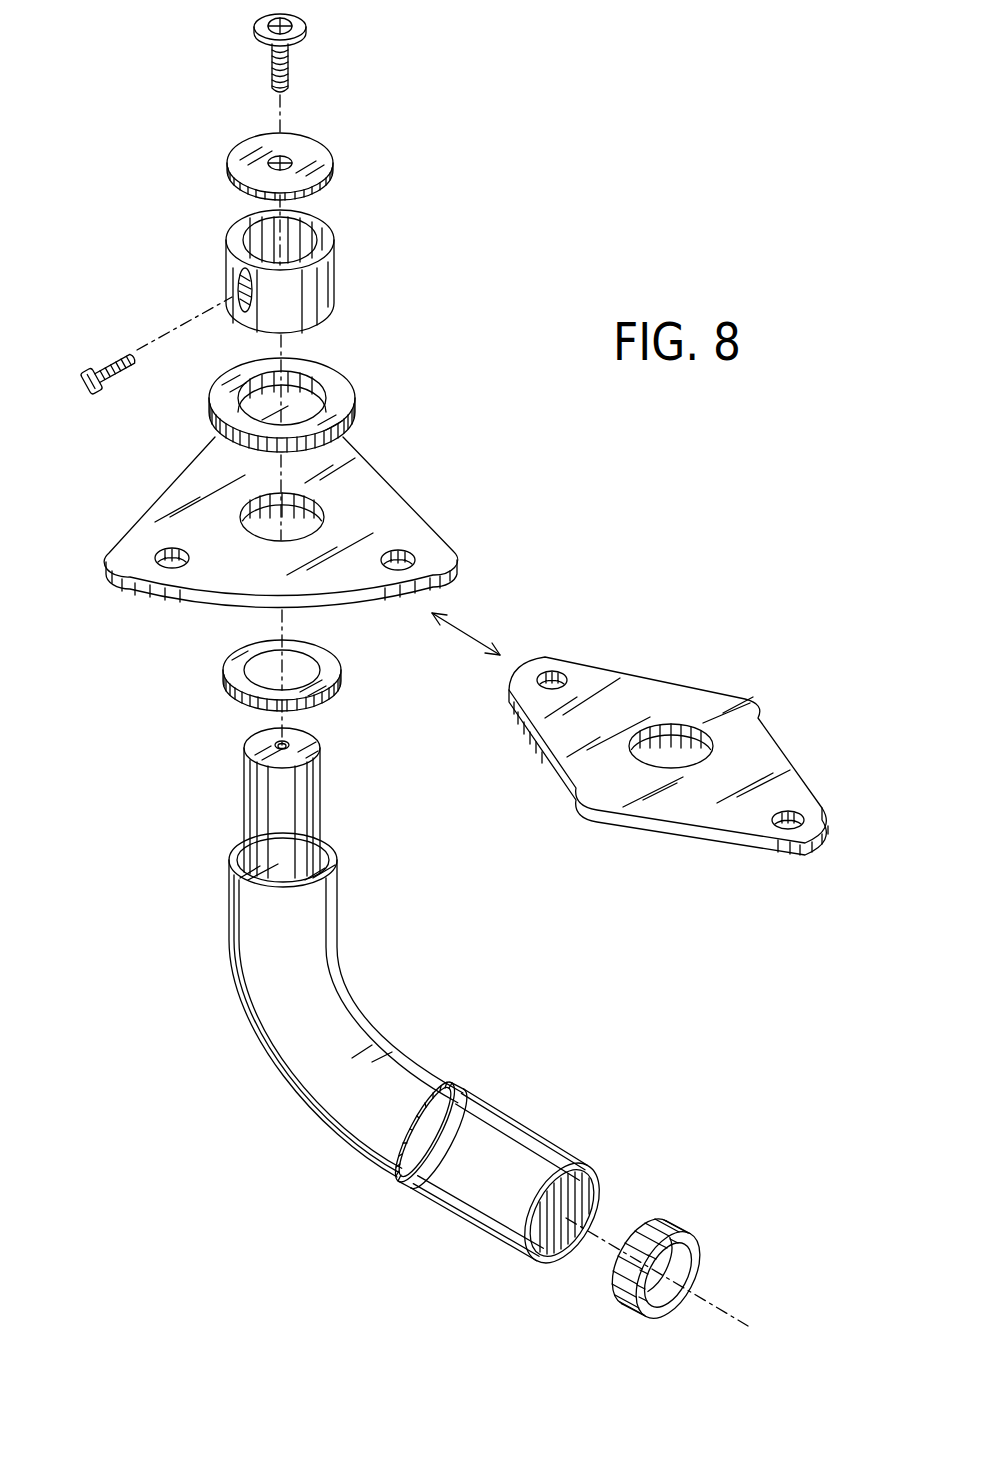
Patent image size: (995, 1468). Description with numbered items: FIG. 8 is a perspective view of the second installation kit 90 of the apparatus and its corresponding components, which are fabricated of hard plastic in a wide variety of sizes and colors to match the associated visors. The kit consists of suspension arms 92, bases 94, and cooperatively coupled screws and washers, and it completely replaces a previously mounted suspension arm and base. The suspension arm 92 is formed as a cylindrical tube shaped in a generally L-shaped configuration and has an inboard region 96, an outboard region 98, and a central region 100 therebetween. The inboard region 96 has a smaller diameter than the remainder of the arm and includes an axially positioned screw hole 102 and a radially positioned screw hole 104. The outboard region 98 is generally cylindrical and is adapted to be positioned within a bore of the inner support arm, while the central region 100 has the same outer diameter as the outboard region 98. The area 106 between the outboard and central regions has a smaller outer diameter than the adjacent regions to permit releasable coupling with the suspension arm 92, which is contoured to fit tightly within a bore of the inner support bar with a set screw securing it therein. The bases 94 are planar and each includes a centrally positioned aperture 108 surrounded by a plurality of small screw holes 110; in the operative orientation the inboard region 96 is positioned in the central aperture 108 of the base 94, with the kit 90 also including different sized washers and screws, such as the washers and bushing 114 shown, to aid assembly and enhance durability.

The second installation kit 90 is at (558, 490).
The suspension arm 92 is at (598, 1187).
The base 94 is at (353, 480).
The inboard region 96 is at (308, 807).
The outboard region 98 is at (490, 1197).
The central region 100 is at (280, 1038).
The axially positioned screw hole 102 is at (280, 745).
The radially positioned screw hole 104 is at (257, 818).
The area between the outboard and central regions 106 is at (455, 1104).
The centrally positioned aperture 108 is at (262, 506).
The small screw holes 110 is at (400, 548).
The bushing 114 is at (315, 293).